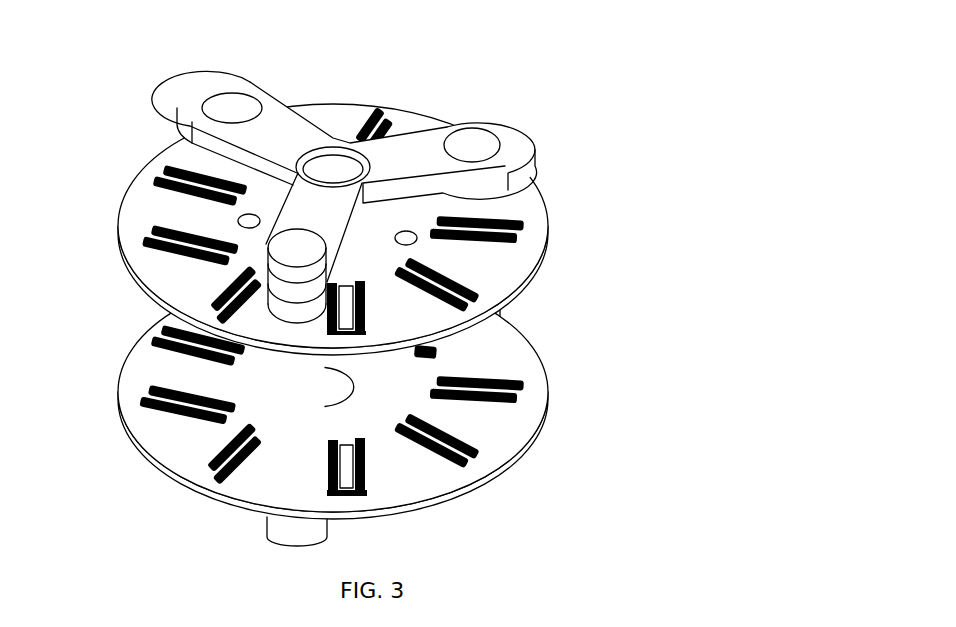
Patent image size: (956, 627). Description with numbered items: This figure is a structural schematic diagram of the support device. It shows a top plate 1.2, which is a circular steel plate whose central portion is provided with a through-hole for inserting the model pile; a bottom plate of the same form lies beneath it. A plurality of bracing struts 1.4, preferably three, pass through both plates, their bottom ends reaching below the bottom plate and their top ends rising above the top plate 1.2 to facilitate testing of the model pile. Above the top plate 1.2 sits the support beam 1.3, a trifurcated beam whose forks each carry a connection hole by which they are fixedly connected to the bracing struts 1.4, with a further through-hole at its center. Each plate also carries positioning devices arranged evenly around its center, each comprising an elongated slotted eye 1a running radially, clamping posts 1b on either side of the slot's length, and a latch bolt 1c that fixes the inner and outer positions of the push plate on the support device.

The top plate 1.2 is at (495, 277).
The support beam 1.3 is at (522, 130).
The bracing struts 1.4 is at (490, 340).
The elongated slotted eye 1a is at (363, 452).
The clamping post 1b is at (518, 378).
The latch bolt 1c is at (363, 491).